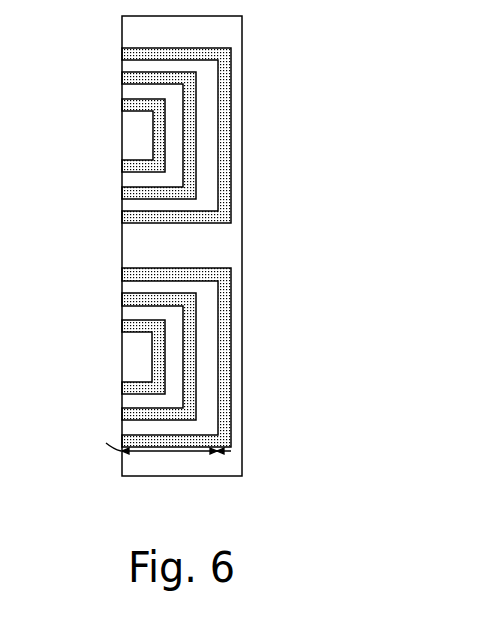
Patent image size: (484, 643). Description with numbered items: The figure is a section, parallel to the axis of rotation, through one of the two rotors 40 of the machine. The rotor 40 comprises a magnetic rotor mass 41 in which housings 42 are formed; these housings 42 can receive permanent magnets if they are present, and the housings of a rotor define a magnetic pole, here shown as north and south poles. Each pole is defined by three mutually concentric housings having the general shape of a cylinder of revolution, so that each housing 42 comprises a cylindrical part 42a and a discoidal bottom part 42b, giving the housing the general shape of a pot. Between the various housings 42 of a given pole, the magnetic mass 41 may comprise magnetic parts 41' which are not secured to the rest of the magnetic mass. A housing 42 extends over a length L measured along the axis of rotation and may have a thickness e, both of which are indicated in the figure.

The rotor 40 is at (232, 258).
The magnetic rotor mass 41 is at (181, 248).
The magnetic parts 41' is at (183, 301).
The housing 42 is at (180, 287).
The cylindrical part 42a is at (123, 80).
The discoidal bottom part 42b is at (150, 345).